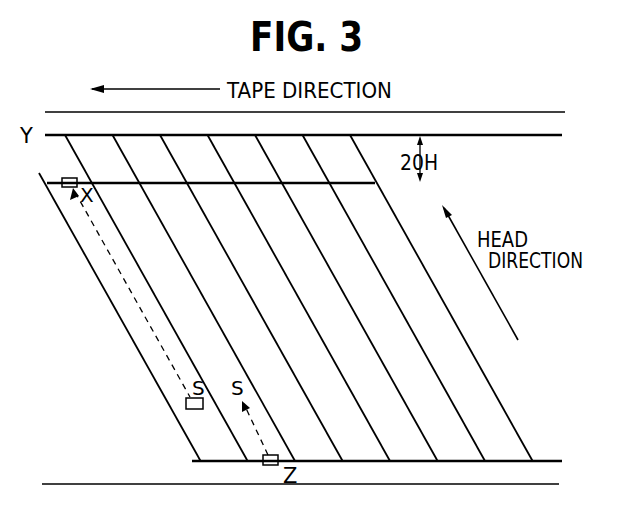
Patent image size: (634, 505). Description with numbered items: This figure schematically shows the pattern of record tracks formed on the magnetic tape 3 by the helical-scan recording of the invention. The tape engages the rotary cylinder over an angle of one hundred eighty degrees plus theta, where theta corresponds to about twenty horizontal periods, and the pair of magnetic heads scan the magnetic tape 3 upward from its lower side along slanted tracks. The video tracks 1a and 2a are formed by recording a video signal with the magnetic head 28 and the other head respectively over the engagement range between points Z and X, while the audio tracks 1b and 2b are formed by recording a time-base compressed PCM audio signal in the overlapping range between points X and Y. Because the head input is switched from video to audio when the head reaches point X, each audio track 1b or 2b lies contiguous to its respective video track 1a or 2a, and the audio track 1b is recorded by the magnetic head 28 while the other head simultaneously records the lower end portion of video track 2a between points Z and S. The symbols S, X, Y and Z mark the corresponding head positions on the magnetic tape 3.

The magnetic tape 3 is at (523, 124).
The magnetic head 28 is at (63, 190).
The video track 1a is at (262, 298).
The video track 2a is at (313, 298).
The audio track 1b is at (211, 167).
The audio track 2b is at (195, 164).